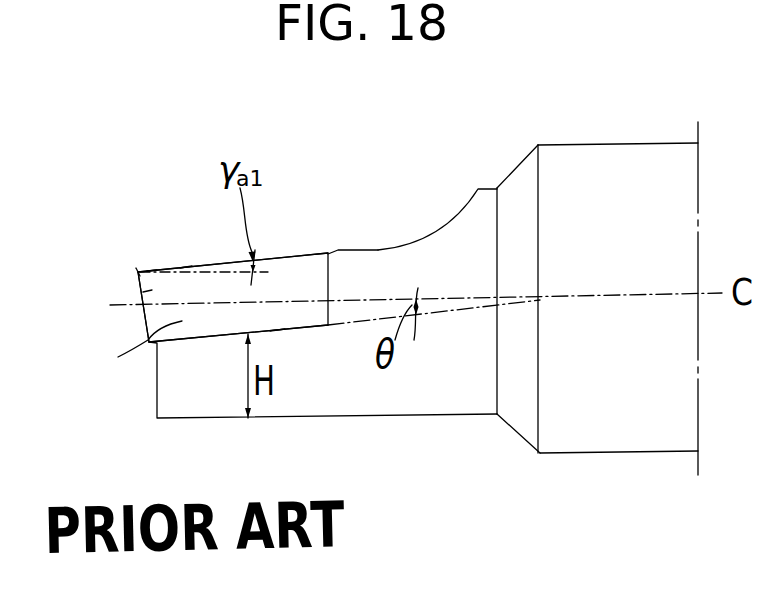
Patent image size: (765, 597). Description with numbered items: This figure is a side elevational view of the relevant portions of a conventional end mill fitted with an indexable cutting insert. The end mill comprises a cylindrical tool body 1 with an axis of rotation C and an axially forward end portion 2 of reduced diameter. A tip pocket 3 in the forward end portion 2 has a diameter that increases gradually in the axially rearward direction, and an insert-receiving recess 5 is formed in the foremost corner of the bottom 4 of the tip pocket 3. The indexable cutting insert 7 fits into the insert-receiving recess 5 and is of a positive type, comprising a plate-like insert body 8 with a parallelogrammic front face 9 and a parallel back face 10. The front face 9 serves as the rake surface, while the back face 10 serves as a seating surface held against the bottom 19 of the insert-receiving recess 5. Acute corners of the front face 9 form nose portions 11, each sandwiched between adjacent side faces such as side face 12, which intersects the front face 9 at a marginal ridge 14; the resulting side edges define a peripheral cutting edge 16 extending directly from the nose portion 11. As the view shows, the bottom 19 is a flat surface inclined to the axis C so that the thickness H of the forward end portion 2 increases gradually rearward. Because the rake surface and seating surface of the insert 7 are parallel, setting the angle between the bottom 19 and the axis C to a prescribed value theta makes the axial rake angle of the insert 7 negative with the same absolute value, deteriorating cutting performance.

The tool body 1 is at (617, 165).
The forward end portion 2 is at (484, 438).
The tip pocket 3 is at (446, 202).
The bottom 4 is at (377, 250).
The insert-receiving recess 5 is at (303, 288).
The indexable cutting insert 7 is at (127, 331).
The insert body 8 is at (136, 350).
The front face 9 is at (212, 252).
The back face 10 is at (307, 340).
The nose portion 11 is at (128, 261).
The side face 12 is at (143, 292).
The marginal ridge 14 is at (184, 267).
The peripheral cutting edge 16 is at (144, 258).
The bottom 19 is at (277, 314).